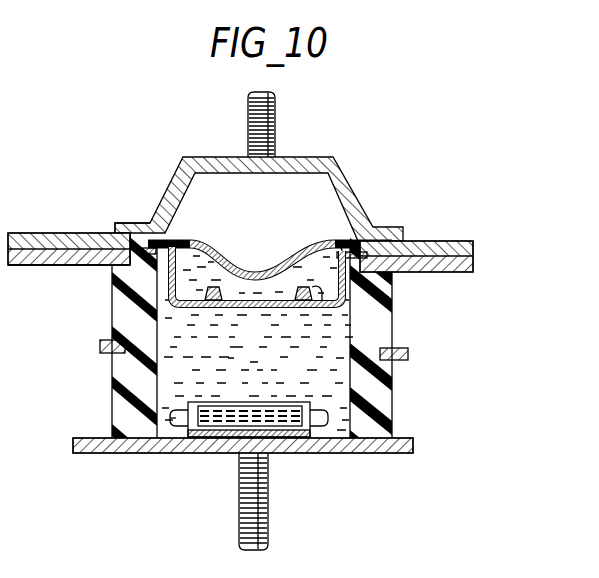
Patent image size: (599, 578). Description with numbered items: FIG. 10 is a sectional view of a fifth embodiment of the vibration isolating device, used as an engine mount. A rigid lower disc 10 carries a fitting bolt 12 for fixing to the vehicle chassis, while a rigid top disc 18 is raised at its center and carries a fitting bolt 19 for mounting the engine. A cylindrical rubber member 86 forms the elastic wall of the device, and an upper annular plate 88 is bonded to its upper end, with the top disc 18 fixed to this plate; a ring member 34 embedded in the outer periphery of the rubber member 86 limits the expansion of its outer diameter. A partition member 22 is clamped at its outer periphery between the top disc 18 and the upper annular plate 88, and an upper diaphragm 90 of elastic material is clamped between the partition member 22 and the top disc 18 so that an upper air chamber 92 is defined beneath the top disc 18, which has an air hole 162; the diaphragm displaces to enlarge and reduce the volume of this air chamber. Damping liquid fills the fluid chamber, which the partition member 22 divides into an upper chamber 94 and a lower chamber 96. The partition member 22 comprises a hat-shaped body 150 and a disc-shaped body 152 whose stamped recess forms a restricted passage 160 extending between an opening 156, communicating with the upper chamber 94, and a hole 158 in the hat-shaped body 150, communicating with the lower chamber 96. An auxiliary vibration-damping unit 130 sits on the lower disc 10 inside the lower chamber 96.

The lower disc 10 is at (356, 457).
The fitting bolt 12 is at (270, 502).
The top disc 18 is at (296, 156).
The fitting bolt 19 is at (277, 108).
The partition member 22 is at (115, 266).
The ring member 34 is at (408, 356).
The cylindrical rubber member 86 is at (394, 323).
The upper annular plate 88 is at (474, 262).
The upper diaphragm 90 is at (350, 240).
The upper air chamber 92 is at (333, 166).
The upper chamber 94 is at (393, 281).
The lower chamber 96 is at (378, 398).
The auxiliary vibration-damping unit 130 is at (173, 410).
The hat-shaped body 150 is at (212, 281).
The disc-shaped body 152 is at (168, 226).
The opening 156 is at (380, 298).
The hole 158 is at (125, 350).
The restricted passage 160 is at (313, 380).
The air hole 162 is at (355, 200).